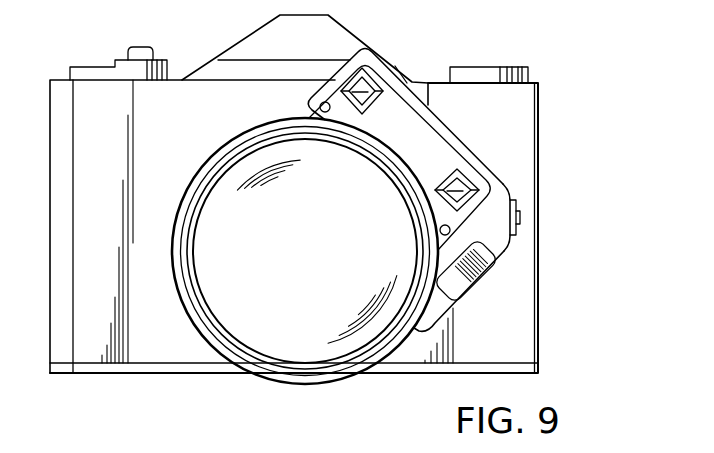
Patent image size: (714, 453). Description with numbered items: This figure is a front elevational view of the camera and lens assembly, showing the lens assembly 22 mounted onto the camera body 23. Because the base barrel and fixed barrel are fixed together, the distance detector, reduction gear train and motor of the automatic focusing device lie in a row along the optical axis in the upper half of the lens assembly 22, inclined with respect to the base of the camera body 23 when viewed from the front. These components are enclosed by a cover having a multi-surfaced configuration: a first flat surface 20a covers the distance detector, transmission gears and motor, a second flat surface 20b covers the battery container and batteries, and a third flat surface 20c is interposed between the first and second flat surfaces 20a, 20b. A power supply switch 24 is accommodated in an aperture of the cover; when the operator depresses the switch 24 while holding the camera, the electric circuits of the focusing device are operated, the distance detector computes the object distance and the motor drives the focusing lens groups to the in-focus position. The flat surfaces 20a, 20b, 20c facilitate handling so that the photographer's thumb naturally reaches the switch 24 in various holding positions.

The first flat surface 20a is at (450, 128).
The second flat surface 20b is at (457, 298).
The third flat surface 20c is at (510, 195).
The lens assembly 22 is at (383, 357).
The camera body 23 is at (535, 95).
The power supply switch 24 is at (518, 221).